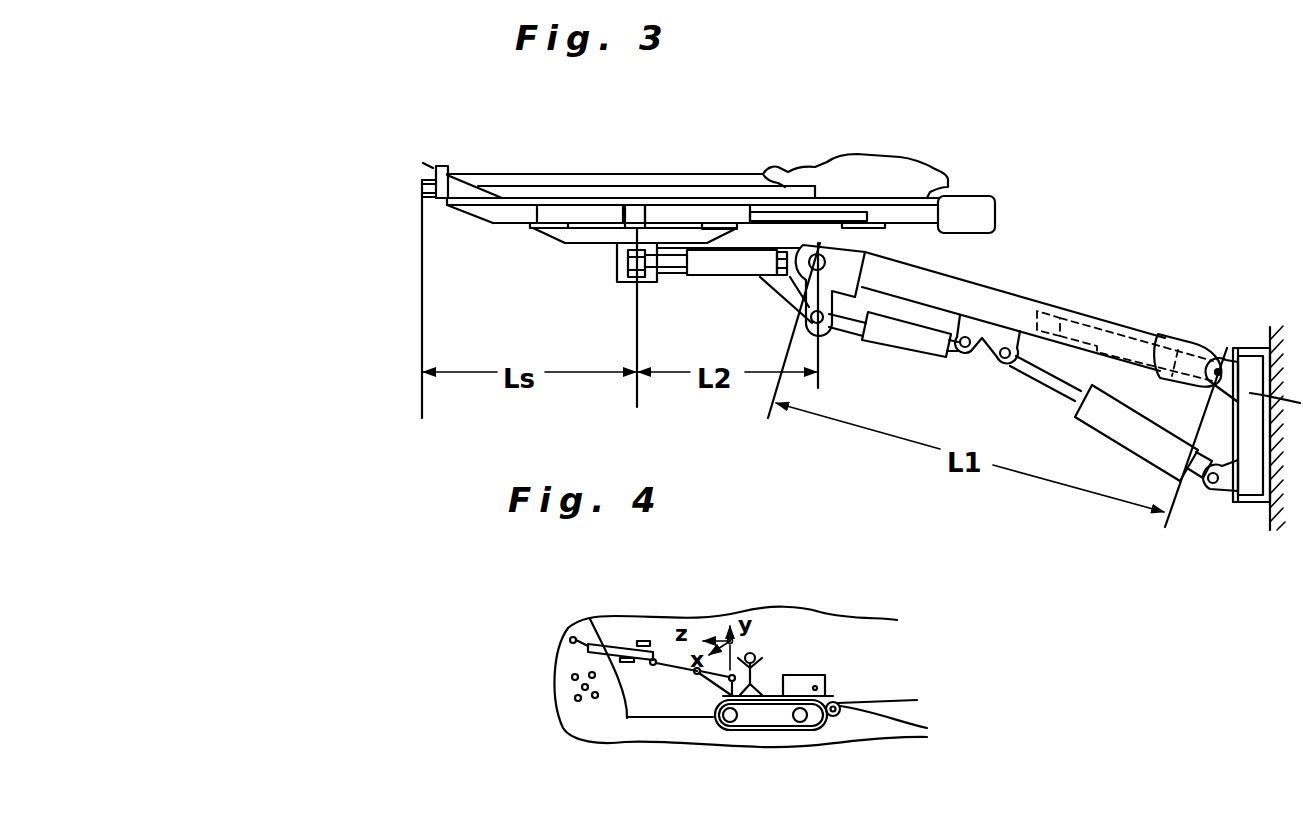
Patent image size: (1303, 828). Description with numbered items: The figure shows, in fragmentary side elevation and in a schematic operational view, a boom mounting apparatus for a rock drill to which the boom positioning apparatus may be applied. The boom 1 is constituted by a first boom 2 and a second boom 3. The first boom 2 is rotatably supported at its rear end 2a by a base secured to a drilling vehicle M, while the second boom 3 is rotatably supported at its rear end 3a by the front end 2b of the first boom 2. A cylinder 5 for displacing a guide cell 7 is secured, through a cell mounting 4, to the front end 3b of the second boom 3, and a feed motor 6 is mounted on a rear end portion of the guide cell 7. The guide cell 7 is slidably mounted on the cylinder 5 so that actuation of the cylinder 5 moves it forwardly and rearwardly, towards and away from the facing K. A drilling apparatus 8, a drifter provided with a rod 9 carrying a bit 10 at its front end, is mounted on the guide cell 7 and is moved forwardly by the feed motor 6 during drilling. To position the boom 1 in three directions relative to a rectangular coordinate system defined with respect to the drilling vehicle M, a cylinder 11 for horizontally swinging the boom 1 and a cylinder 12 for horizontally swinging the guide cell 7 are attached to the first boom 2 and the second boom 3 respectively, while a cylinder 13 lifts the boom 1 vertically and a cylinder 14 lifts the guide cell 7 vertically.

In FIG. 3, the boom 1 is at (793, 240).
In FIG. 4, the boom 1 is at (712, 686).
In FIG. 3, the first boom 2 is at (977, 290).
In FIG. 3, the rear end of first boom 2a is at (1213, 350).
In FIG. 3, the front end of first boom 2b is at (857, 245).
In FIG. 3, the second boom 3 is at (672, 282).
In FIG. 3, the rear end of second boom 3a is at (782, 280).
In FIG. 3, the front end of second boom 3b is at (620, 285).
In FIG. 3, the cell mounting 4 is at (636, 214).
In FIG. 3, the cylinder 5 is at (558, 215).
In FIG. 3, the feed motor 6 is at (978, 208).
In FIG. 3, the guide cell 7 is at (474, 208).
In FIG. 3, the drilling apparatus 8 is at (888, 167).
In FIG. 4, the drilling apparatus 8 is at (641, 643).
In FIG. 3, the rod 9 is at (584, 178).
In FIG. 3, the bit 10 is at (432, 166).
In FIG. 3, the cylinder for horizontally swinging the boom 11 is at (1127, 325).
In FIG. 3, the cylinder for horizontally swinging the guide cell 12 is at (725, 270).
In FIG. 3, the cylinder for vertically lifting the boom 13 is at (1117, 423).
In FIG. 3, the cylinder for vertically lifting the guide cell 14 is at (897, 337).
In FIG. 3, the drilling vehicle M is at (1270, 528).
In FIG. 4, the drilling vehicle M is at (767, 718).
In FIG. 4, the facing K is at (567, 708).